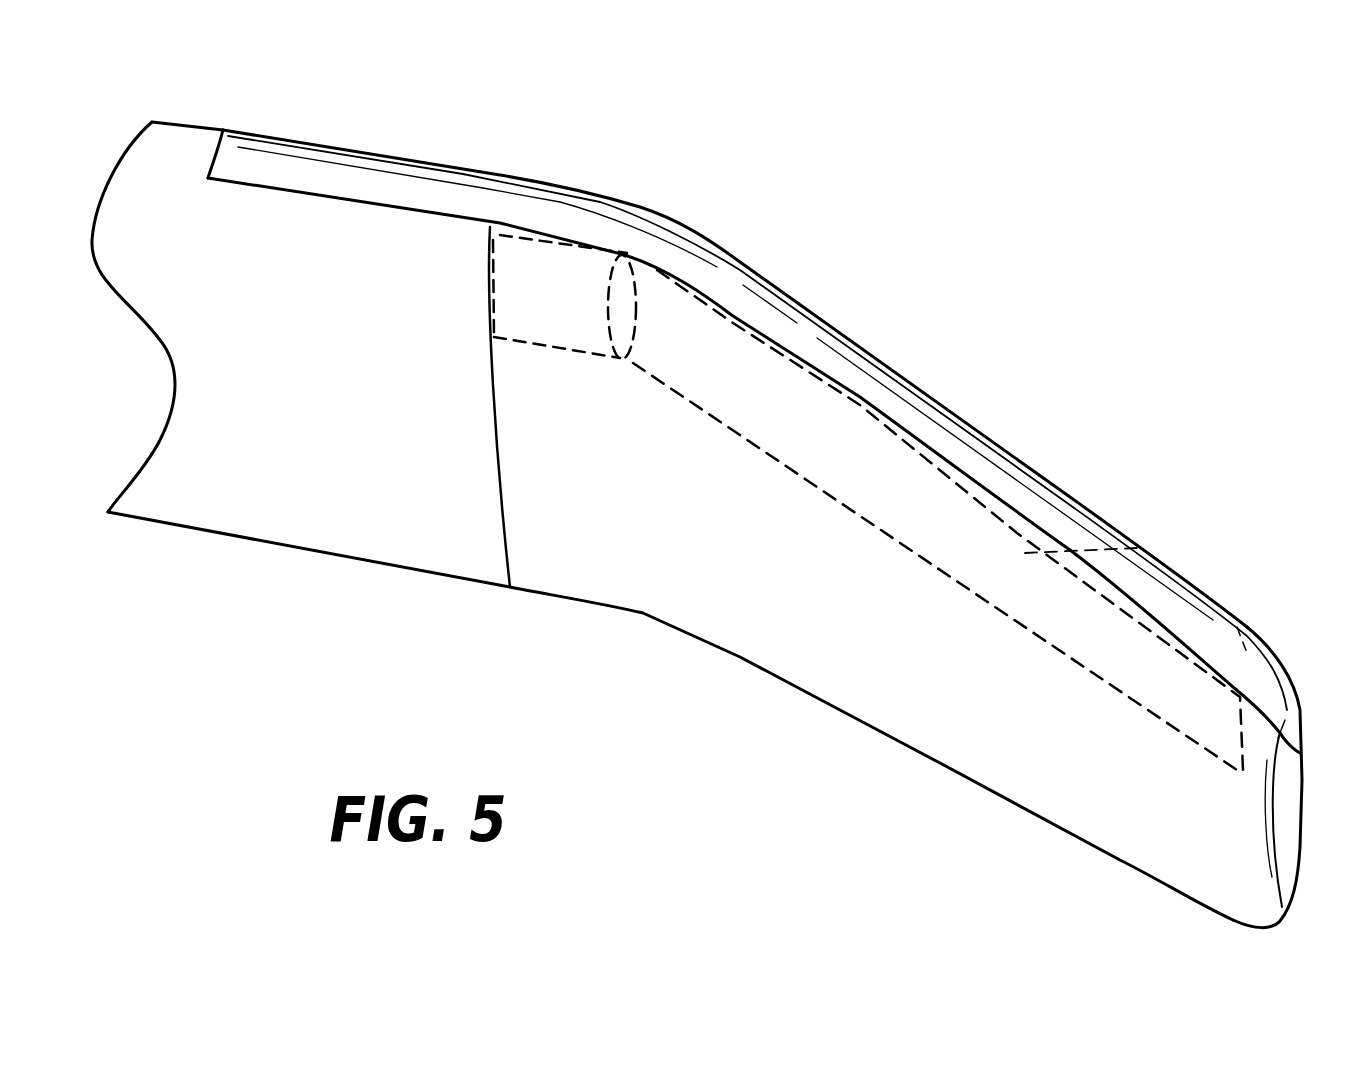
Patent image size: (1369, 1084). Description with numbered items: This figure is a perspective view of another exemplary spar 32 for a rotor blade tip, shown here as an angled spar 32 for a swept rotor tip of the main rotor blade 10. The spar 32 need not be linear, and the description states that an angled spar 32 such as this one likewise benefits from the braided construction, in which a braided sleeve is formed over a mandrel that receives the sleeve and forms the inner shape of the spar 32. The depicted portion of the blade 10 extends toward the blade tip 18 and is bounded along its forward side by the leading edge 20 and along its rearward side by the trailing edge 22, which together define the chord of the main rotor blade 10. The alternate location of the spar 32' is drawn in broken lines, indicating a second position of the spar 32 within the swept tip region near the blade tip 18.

The main rotor blade 10 is at (903, 236).
The blade tip 18 is at (1303, 807).
The leading edge 20 is at (193, 128).
The trailing edge 22 is at (360, 560).
The spar 32 is at (564, 242).
The aperture (alternate position) 32' is at (938, 520).